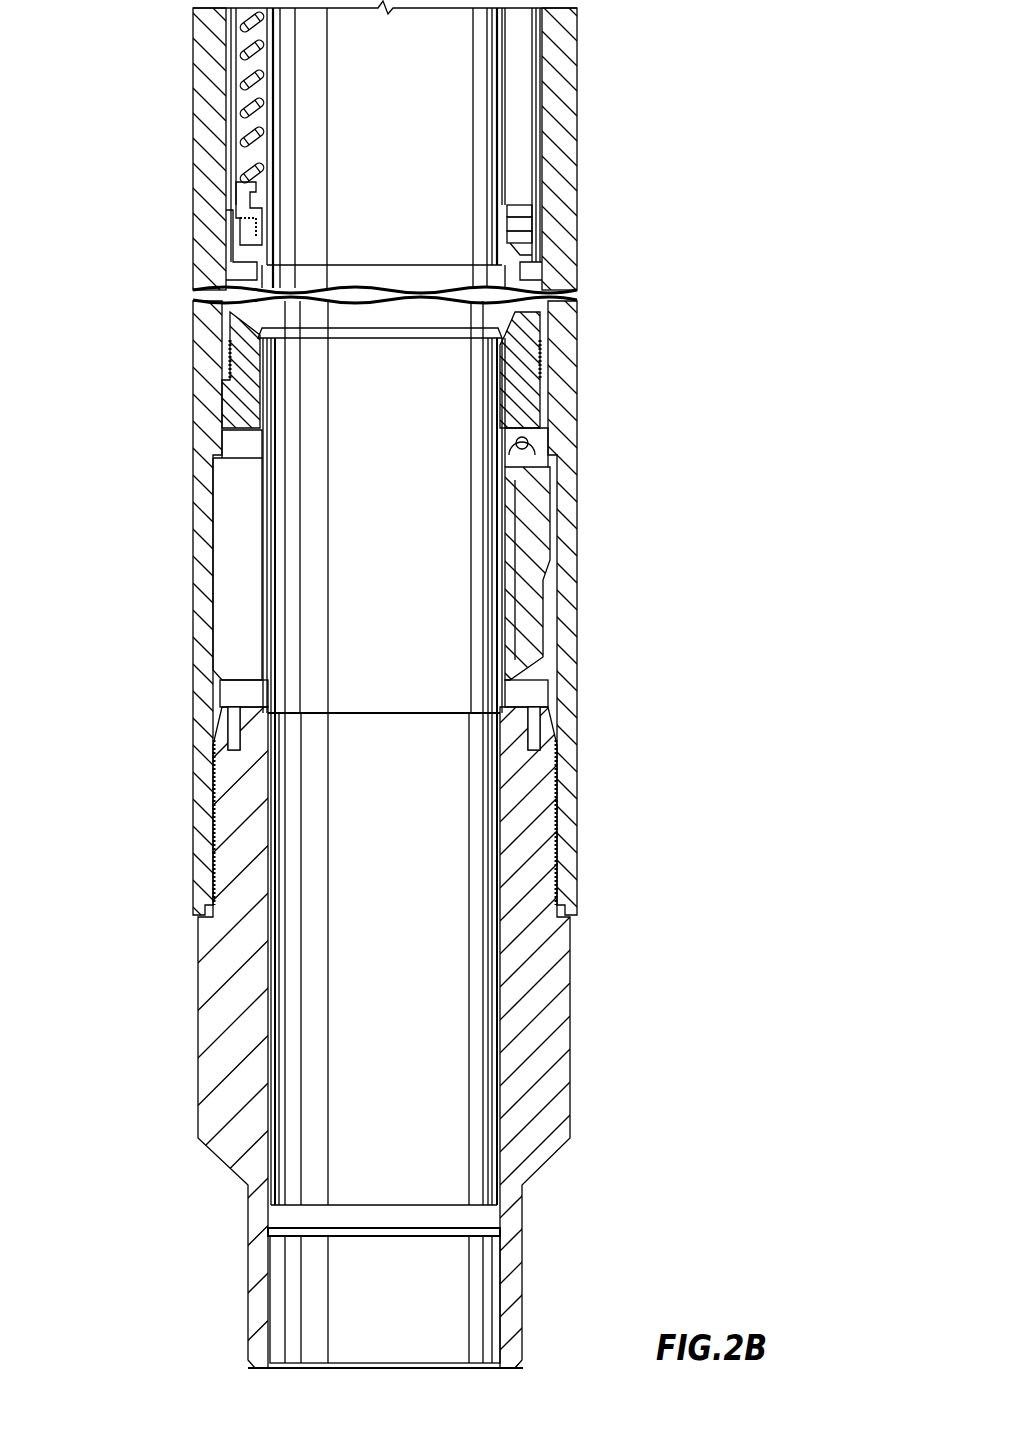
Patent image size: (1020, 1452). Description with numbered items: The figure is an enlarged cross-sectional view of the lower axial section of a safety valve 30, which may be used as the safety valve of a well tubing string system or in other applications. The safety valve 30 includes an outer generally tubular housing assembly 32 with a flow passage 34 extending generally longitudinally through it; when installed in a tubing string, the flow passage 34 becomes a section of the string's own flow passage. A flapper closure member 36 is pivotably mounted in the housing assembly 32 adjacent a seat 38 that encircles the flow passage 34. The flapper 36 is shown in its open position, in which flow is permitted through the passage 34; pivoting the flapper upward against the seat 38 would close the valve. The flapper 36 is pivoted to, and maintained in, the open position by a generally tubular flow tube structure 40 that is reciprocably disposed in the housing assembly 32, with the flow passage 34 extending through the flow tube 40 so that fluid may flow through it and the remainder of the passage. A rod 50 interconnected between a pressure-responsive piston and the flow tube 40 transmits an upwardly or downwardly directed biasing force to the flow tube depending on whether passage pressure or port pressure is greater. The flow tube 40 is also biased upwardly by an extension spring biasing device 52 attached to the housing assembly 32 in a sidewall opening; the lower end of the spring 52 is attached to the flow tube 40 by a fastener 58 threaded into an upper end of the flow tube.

The safety valve 30 is at (730, 95).
The housing assembly 32 is at (583, 824).
The flow passage 34 is at (273, 998).
The flapper closure member 36 is at (556, 558).
The seat 38 is at (262, 447).
The flow tube structure 40 is at (265, 591).
The rod 50 is at (546, 93).
The extension spring biasing device 52 is at (242, 175).
The fastener 58 is at (240, 200).